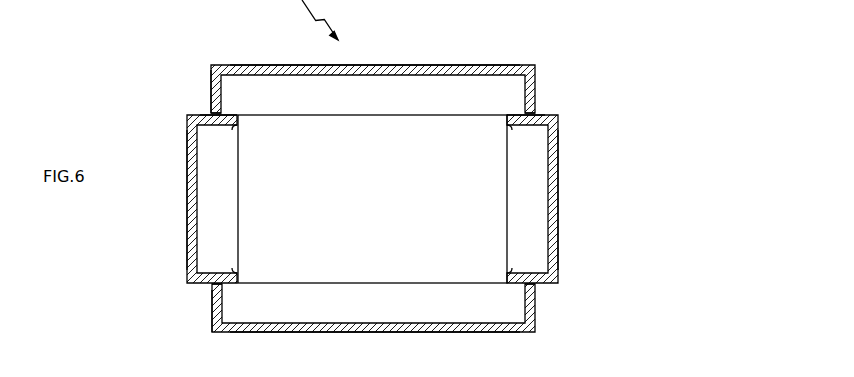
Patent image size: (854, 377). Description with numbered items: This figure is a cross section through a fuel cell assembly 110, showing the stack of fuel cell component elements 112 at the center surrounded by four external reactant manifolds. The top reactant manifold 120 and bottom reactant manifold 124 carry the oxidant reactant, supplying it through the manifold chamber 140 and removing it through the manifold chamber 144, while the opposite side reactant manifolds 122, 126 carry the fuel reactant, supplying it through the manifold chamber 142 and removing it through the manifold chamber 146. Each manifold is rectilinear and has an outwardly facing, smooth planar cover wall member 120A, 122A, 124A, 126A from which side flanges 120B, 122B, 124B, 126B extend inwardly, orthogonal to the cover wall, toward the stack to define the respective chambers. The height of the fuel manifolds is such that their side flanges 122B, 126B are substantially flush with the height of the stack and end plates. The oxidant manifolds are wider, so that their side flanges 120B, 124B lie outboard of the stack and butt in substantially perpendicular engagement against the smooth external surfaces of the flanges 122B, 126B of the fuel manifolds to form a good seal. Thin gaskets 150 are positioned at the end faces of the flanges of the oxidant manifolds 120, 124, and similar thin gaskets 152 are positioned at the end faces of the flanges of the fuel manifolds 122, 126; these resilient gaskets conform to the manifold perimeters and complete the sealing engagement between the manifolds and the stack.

The fuel cell assembly 110 is at (400, 186).
The fuel cell component elements 112 is at (380, 203).
The top reactant manifold 120 is at (376, 59).
The cover wall member 120A is at (433, 62).
The side flange 120B is at (211, 80).
The side reactant manifold 122 is at (581, 202).
The cover wall member 122A is at (560, 238).
The side flange 122B is at (545, 115).
The bottom reactant manifold 124 is at (378, 327).
The cover wall member 124A is at (372, 335).
The side flange 124B is at (212, 308).
The side reactant manifold 126 is at (178, 197).
The cover wall member 126A is at (187, 208).
The side flange 126B is at (202, 114).
The manifold chamber 140 is at (397, 98).
The manifold chamber 142 is at (543, 193).
The manifold chamber 144 is at (389, 308).
The manifold chamber 146 is at (232, 193).
The thin gaskets 150 is at (222, 113).
The thin gaskets 152 is at (236, 125).